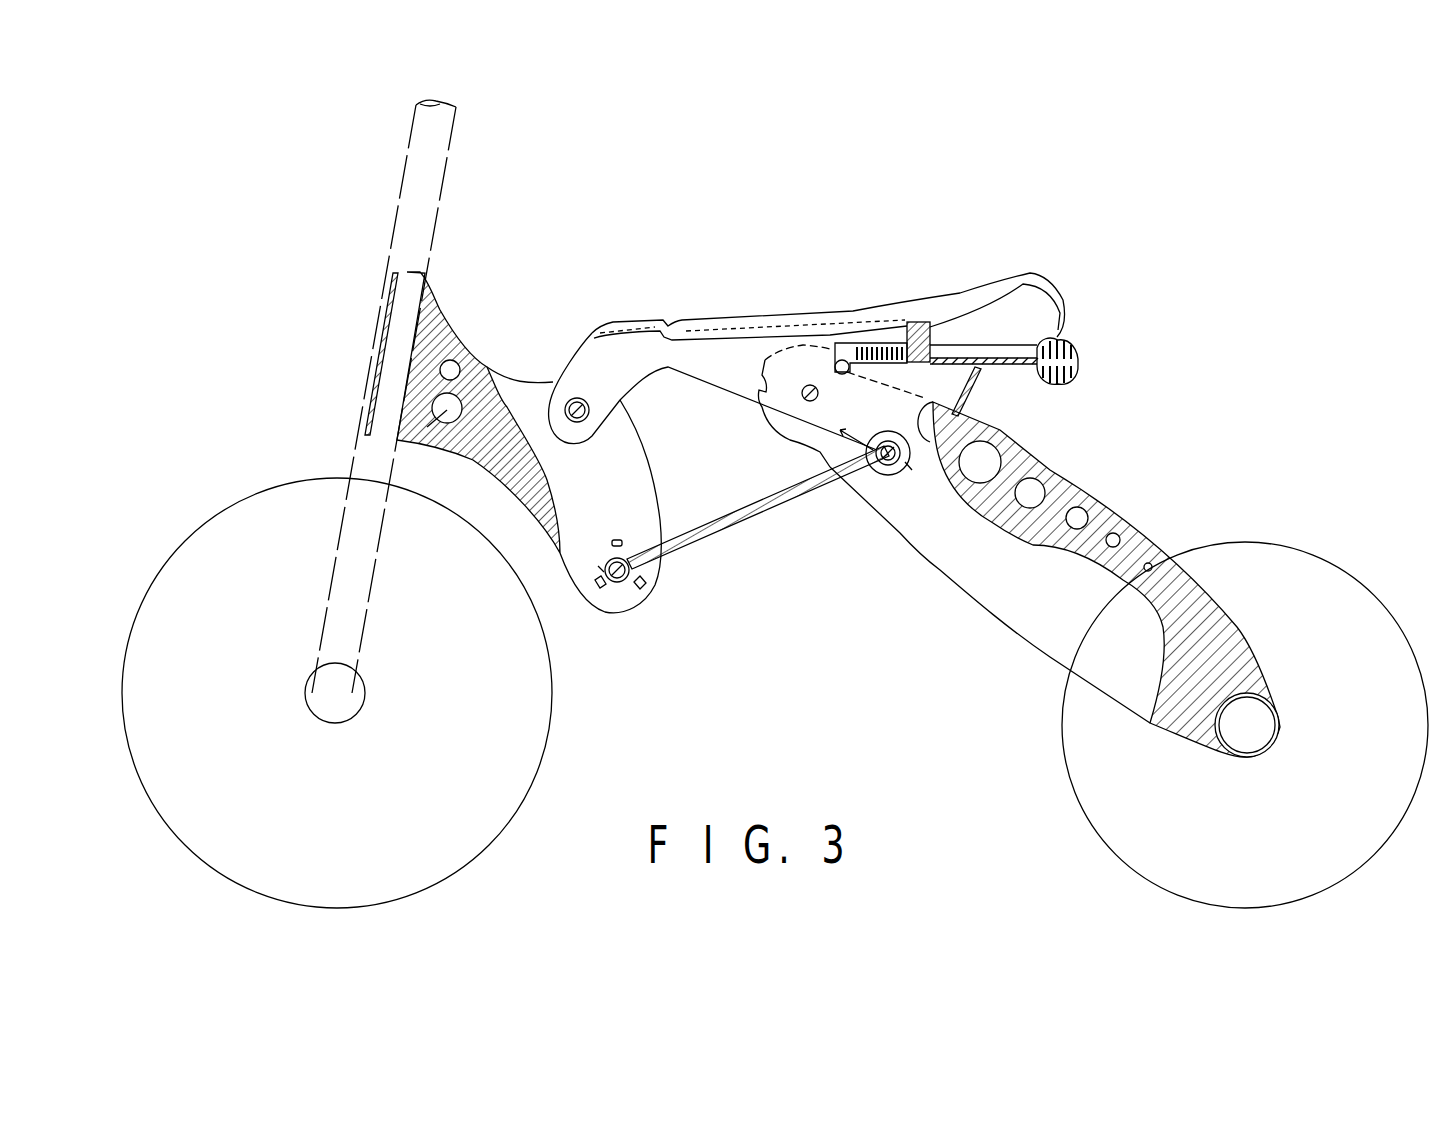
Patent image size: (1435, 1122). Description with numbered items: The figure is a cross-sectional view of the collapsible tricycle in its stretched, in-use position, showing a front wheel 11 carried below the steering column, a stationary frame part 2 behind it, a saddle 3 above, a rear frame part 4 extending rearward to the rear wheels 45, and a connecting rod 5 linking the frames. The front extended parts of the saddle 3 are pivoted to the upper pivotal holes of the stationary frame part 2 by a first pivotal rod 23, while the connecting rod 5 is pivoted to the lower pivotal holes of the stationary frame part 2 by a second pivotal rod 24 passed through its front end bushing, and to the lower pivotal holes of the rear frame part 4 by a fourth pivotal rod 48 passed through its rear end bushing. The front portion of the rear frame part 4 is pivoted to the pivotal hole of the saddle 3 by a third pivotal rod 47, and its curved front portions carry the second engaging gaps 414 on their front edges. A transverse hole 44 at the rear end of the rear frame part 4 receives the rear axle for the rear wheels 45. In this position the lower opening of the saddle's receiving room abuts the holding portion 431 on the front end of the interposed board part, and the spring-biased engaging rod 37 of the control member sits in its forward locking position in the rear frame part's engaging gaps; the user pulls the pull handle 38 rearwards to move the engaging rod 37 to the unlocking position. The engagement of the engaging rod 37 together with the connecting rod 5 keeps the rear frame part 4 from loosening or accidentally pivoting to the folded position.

The front wheel 11 is at (213, 535).
The stationary frame part 2 is at (495, 355).
The first pivotal rod 23 is at (577, 400).
The second pivotal rod 24 is at (617, 582).
The saddle 3 is at (797, 320).
The engaging rod 37 is at (843, 365).
The pull handle 38 is at (1070, 387).
The rear frame part 4 is at (1003, 630).
The second engaging gaps 414 is at (763, 403).
The holding portion 431 is at (933, 402).
The transverse hole 44 is at (1230, 717).
The rear wheels 45 is at (1063, 775).
The third pivotal rod 47 is at (813, 403).
The fourth pivotal rod 48 is at (890, 465).
The connecting rod 5 is at (757, 525).